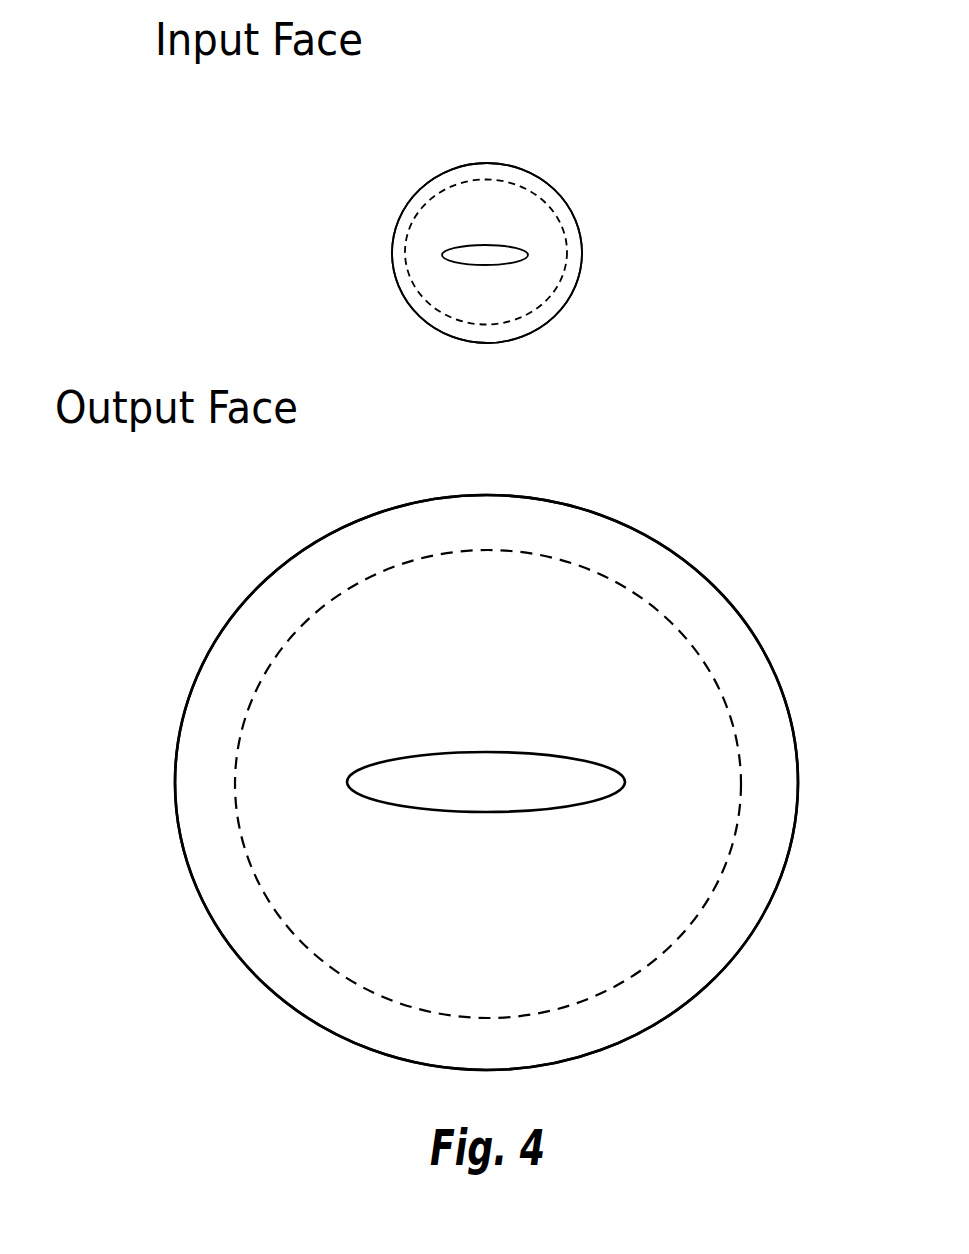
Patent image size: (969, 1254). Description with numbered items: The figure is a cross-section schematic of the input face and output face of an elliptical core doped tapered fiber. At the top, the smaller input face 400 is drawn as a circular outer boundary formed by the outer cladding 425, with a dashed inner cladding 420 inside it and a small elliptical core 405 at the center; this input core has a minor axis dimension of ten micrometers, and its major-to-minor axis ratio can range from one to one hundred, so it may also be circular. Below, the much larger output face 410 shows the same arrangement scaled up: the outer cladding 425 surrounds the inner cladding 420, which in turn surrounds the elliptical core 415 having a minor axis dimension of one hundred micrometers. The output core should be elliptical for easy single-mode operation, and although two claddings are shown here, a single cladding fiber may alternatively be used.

The input face 400 is at (411, 205).
The output face 410 is at (475, 753).
The outer cladding 425 is at (486, 581).
The inner cladding 420 is at (527, 614).
The elliptical core 405 is at (553, 210).
The elliptical core 415 is at (486, 757).